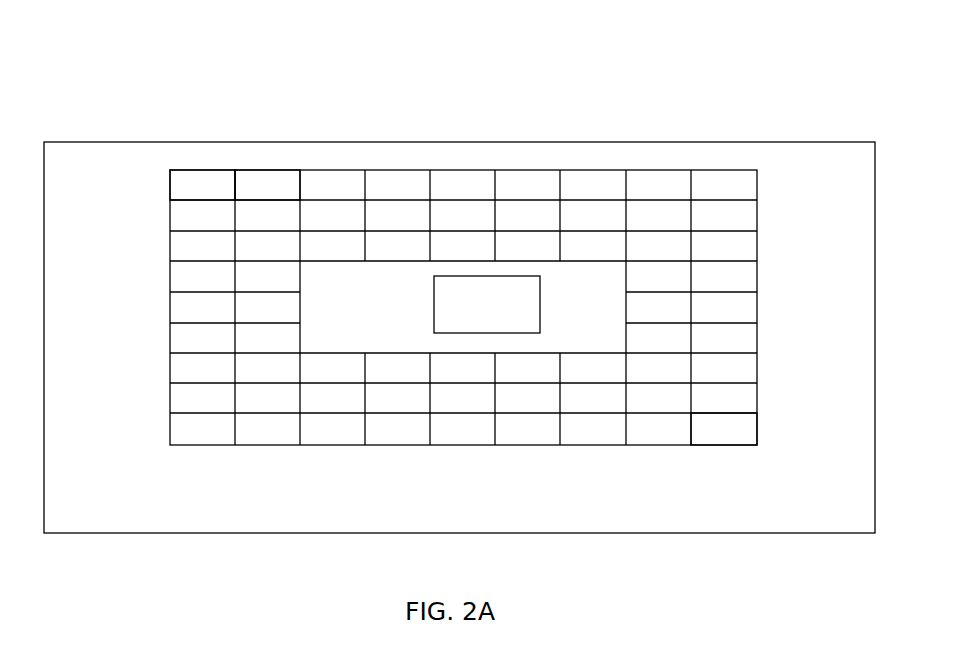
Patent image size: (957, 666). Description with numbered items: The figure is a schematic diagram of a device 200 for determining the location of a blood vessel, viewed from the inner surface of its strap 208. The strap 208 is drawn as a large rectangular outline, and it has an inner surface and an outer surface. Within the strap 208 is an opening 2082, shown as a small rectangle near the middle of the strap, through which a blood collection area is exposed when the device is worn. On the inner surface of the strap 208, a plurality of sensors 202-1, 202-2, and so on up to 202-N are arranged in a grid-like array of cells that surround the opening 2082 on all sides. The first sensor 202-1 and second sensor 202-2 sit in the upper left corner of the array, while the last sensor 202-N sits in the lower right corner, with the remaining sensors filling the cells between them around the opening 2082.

The device for determining a location of a blood vessel 200 is at (66, 55).
The strap 208 is at (80, 142).
The sensor 202-1 is at (202, 185).
The sensor 202-2 is at (267, 185).
The sensor 202-N is at (724, 429).
The opening 2082 is at (434, 303).